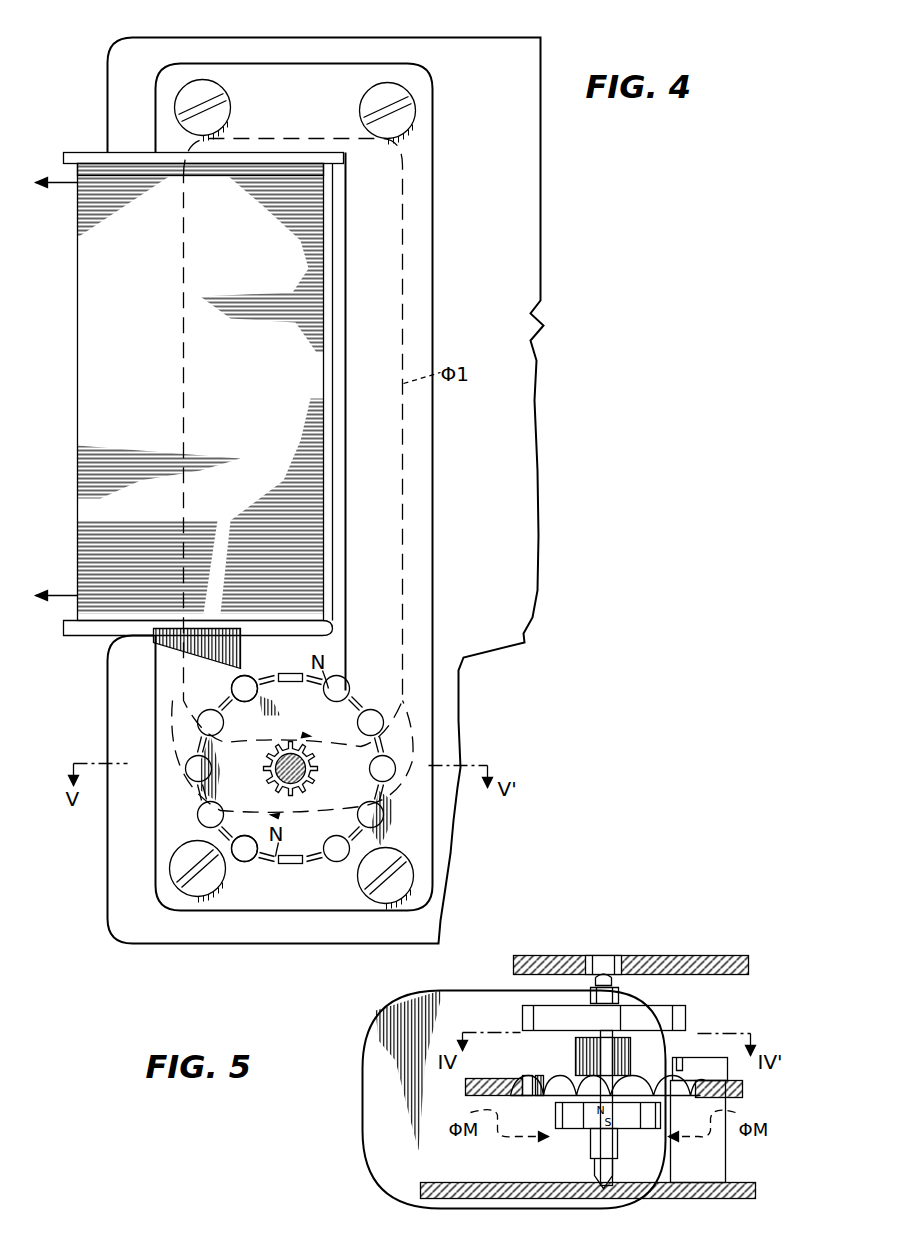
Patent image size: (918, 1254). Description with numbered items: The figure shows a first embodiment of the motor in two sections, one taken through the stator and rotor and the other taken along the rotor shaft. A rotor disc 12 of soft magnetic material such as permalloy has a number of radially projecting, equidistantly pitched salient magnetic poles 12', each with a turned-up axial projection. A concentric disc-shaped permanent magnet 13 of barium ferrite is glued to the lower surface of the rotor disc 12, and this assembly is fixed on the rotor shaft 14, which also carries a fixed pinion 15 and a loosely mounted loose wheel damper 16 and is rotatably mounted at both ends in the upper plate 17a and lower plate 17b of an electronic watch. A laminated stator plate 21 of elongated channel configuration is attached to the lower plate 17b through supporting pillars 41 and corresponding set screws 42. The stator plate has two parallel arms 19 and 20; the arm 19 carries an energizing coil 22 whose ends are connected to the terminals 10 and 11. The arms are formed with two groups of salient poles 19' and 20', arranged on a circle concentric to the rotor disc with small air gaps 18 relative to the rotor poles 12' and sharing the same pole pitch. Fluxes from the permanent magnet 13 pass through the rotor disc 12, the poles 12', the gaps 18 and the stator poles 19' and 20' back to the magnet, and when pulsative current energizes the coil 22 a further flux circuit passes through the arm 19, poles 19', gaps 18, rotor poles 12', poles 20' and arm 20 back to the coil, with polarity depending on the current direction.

In FIG. 4, the terminal 10 is at (53, 172).
In FIG. 4, the terminal 11 is at (56, 585).
In FIG. 4, the rotor disc 12 is at (291, 792).
In FIG. 4, the magnetic poles 12' is at (298, 803).
In FIG. 5, the magnetic poles 12' is at (608, 1067).
In FIG. 5, the permanent magnet 13 is at (598, 1125).
In FIG. 4, the rotor shaft 14 is at (306, 770).
In FIG. 5, the rotor shaft 14 is at (612, 1140).
In FIG. 4, the pinion 15 is at (298, 745).
In FIG. 5, the pinion 15 is at (615, 1066).
In FIG. 5, the loose wheel damper 16 is at (680, 1018).
In FIG. 5, the upper plate 17a is at (695, 965).
In FIG. 4, the lower plate 17b is at (268, 945).
In FIG. 5, the lower plate 17b is at (740, 1182).
In FIG. 4, the air gaps 18 is at (242, 688).
In FIG. 5, the air gaps 18 is at (527, 1078).
In FIG. 4, the stator arm 19 is at (167, 780).
In FIG. 4, the salient poles 19' is at (176, 697).
In FIG. 4, the stator arm 20 is at (331, 486).
In FIG. 4, the salient poles 20' is at (434, 773).
In FIG. 4, the laminated stator plate 21 is at (412, 265).
In FIG. 5, the laminated stator plate 21 is at (745, 1095).
In FIG. 4, the energizing coil 22 is at (77, 410).
In FIG. 5, the energizing coil 22 is at (380, 1050).
In FIG. 5, the supporting pillars 41 is at (708, 1185).
In FIG. 4, the set screws 42 is at (220, 98).
In FIG. 5, the set screws 42 is at (722, 1077).